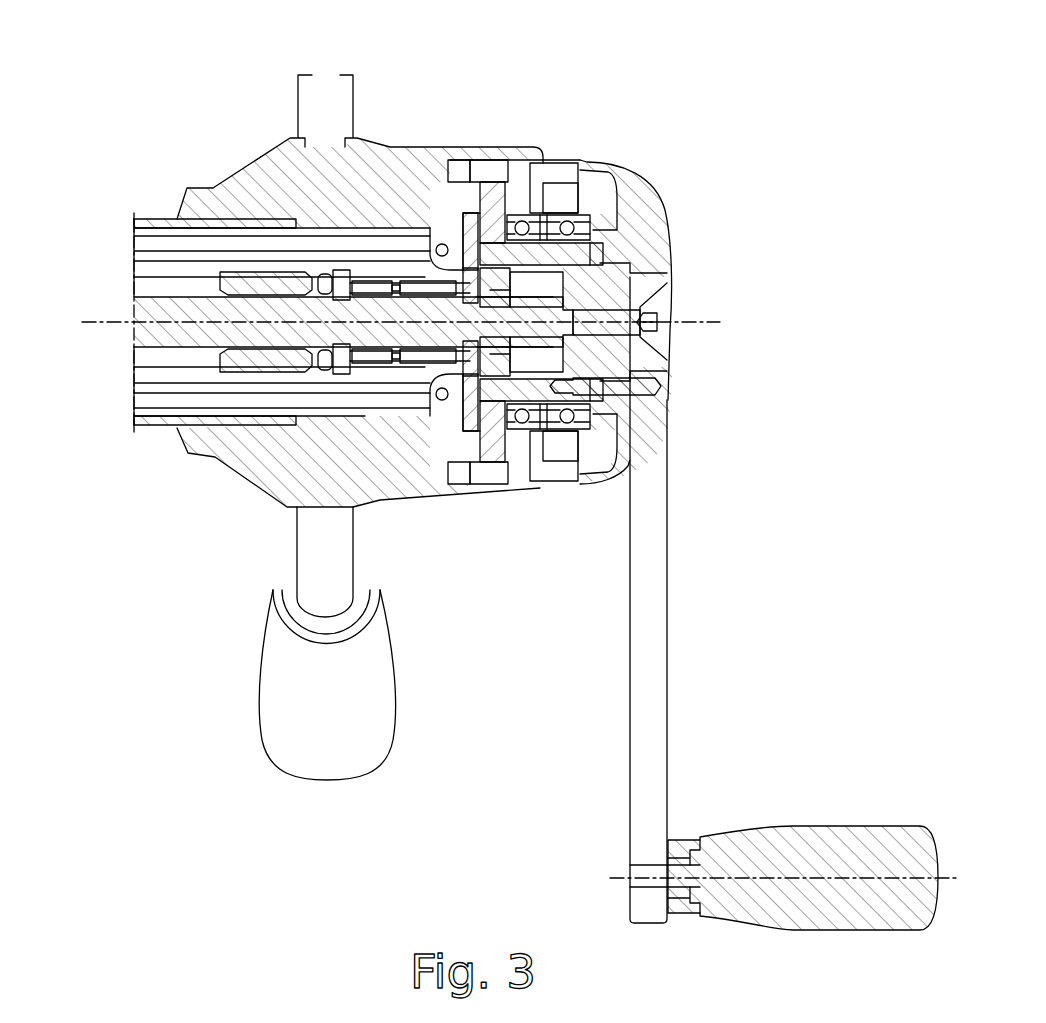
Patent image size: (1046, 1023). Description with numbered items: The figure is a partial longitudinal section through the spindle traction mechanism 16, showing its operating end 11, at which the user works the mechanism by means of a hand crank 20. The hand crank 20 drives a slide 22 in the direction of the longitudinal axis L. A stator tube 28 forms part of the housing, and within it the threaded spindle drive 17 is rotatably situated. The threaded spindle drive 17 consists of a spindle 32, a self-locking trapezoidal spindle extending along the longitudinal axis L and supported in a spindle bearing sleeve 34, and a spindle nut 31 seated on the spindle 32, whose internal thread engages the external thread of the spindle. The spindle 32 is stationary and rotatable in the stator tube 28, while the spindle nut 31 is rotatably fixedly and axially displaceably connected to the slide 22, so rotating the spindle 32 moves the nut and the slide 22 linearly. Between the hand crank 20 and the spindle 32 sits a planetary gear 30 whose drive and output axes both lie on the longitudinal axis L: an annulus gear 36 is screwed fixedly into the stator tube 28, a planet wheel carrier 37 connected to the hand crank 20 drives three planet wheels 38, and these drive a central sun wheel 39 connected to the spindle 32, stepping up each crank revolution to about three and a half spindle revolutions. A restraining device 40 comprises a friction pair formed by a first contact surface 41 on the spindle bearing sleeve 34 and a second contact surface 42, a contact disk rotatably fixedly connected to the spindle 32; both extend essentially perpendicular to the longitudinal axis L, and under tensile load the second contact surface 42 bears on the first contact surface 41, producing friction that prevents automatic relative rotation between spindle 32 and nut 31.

The operating end 11 is at (468, 610).
The spindle traction mechanism 16 is at (289, 859).
The threaded spindle drive 17 is at (162, 522).
The hand crank 20 is at (650, 637).
The slide 22 is at (147, 268).
The stator tube 28 is at (152, 223).
The gear 30 is at (542, 503).
The spindle nut 31 is at (247, 363).
The spindle 32 is at (158, 345).
The spindle bearing sleeve 34 is at (388, 272).
The annulus gear 36 is at (473, 163).
The planet wheel carrier 37 is at (500, 185).
The planet wheel 38 is at (482, 183).
The sun wheel 39 is at (490, 355).
The restraining device 40 is at (458, 596).
The first contact surface 41 is at (458, 285).
The second contact surface 42 is at (467, 355).
The longitudinal axis L is at (688, 322).